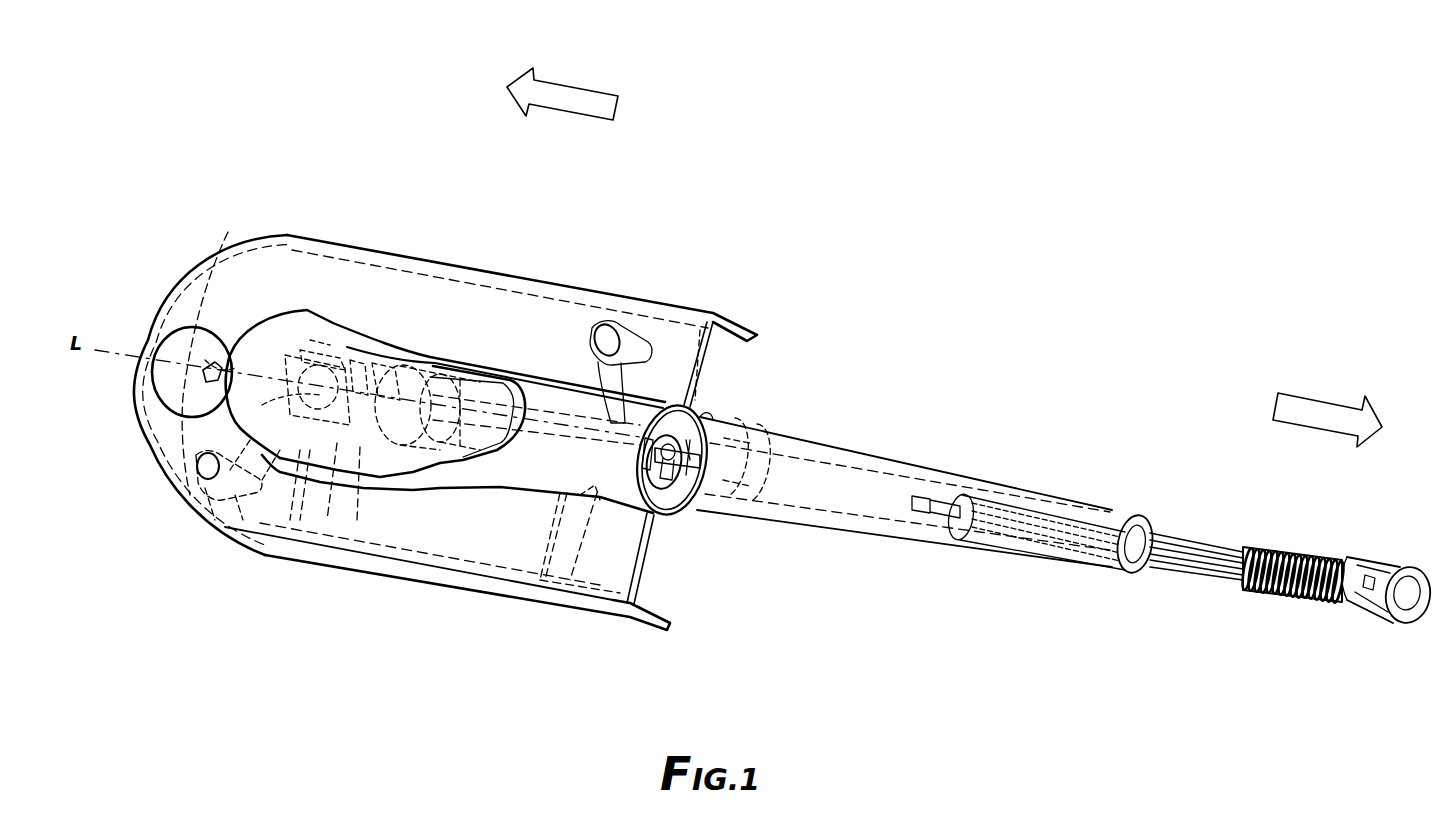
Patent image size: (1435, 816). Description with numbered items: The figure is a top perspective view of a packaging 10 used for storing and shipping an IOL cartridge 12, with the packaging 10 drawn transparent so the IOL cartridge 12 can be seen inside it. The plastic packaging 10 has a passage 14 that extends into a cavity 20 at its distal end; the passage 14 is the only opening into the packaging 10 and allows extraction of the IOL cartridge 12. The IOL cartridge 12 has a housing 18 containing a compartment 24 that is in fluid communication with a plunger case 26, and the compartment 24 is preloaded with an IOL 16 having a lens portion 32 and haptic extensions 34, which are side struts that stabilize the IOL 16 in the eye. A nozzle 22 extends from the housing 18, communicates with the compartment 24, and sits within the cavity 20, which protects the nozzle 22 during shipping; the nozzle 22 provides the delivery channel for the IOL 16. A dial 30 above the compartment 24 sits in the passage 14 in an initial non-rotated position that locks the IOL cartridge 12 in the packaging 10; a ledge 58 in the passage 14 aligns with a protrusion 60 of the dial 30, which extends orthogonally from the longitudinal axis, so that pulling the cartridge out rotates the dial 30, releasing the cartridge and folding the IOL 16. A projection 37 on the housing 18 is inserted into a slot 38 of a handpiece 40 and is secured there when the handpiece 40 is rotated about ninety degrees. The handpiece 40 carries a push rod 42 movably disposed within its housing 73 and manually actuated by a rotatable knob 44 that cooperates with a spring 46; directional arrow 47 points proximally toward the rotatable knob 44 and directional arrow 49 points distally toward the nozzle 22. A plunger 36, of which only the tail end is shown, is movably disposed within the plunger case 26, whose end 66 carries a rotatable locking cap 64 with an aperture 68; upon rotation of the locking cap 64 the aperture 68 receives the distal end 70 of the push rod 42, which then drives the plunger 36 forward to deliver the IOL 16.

The packaging 10 is at (424, 189).
The IOL cartridge 12 is at (372, 452).
The passage 14 is at (672, 505).
The IOL 16 is at (318, 345).
The housing 18 is at (410, 355).
The cavity 20 is at (172, 377).
The nozzle 22 is at (203, 363).
The compartment 24 is at (305, 460).
The plunger case 26 is at (550, 447).
The dial 30 is at (335, 350).
The lens portion 32 is at (208, 524).
The haptic extensions 34 is at (245, 290).
The plunger 36 is at (692, 470).
The projection 37 is at (420, 363).
The slot 38 is at (703, 400).
The handpiece 40 is at (1013, 586).
The push rod 42 is at (1160, 567).
The rotatable knob 44 is at (1374, 553).
The spring 46 is at (1274, 543).
The directional arrow 47 is at (1296, 393).
The directional arrow 49 is at (593, 88).
The ledge 58 is at (392, 350).
The protrusion 60 is at (353, 355).
The rotatable locking cap 64 is at (690, 505).
The end 66 is at (628, 490).
The aperture 68 is at (655, 405).
The distal end 70 is at (920, 500).
The housing 73 is at (1045, 510).